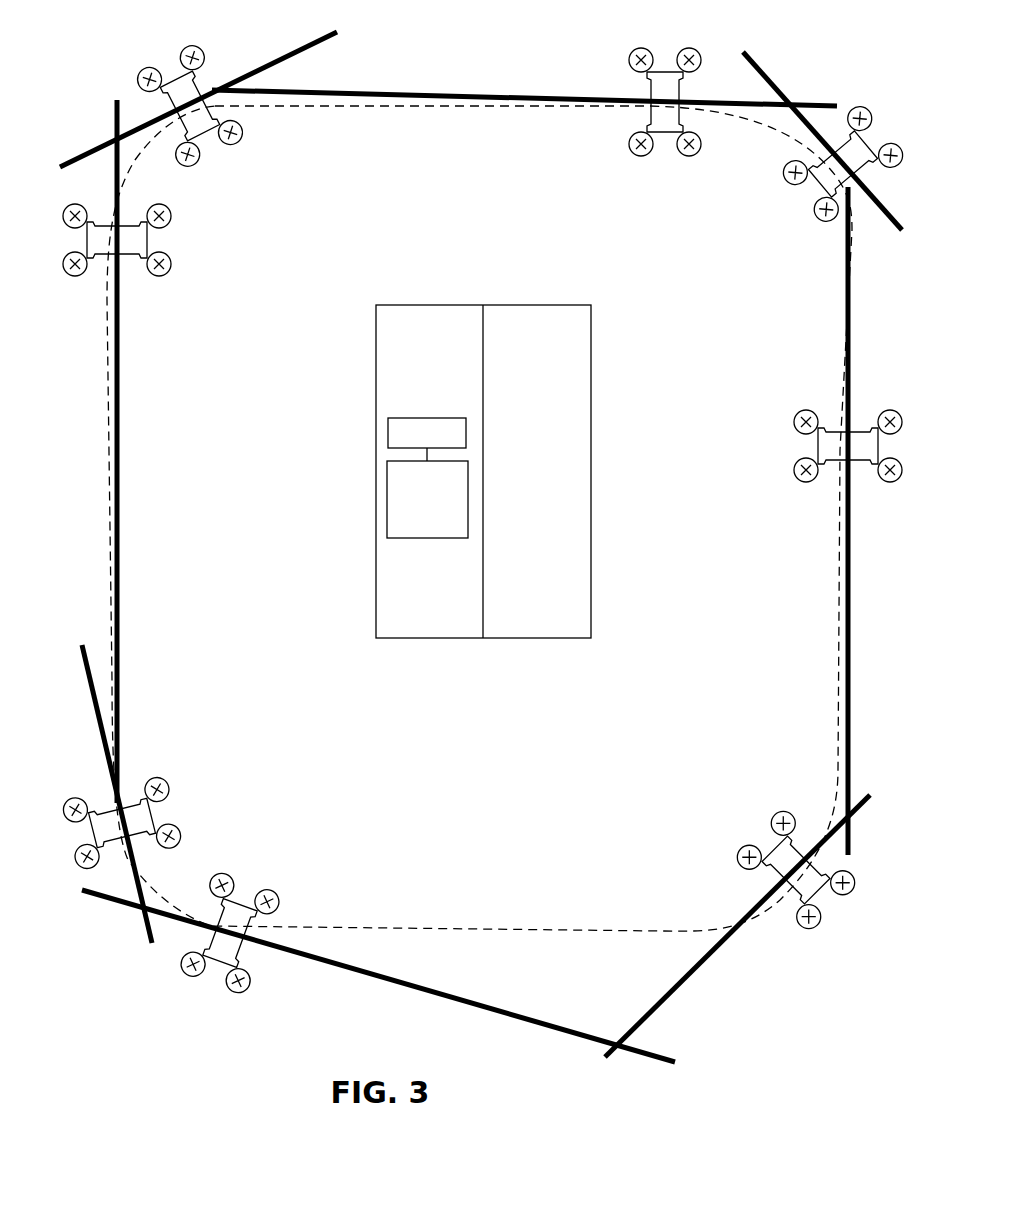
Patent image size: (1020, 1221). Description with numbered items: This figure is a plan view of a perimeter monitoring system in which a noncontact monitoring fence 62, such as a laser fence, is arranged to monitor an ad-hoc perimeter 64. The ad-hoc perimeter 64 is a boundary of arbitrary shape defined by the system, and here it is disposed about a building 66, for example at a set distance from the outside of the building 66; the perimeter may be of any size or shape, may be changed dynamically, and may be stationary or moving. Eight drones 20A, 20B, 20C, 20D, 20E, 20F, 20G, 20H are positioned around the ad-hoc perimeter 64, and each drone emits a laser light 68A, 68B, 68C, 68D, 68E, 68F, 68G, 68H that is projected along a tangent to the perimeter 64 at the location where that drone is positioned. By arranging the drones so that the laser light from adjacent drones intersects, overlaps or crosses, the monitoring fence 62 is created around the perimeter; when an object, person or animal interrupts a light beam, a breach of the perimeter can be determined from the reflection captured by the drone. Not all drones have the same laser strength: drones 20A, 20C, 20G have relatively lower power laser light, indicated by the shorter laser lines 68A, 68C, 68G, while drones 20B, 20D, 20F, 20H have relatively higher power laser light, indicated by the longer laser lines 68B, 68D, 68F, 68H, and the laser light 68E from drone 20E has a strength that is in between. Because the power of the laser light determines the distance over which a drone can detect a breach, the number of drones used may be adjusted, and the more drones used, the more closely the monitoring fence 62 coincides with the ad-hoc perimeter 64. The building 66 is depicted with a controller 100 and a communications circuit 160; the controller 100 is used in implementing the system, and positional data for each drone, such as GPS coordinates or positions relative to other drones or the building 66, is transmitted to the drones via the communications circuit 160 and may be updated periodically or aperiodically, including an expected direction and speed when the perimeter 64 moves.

The drone 20A is at (243, 137).
The drone 20B is at (162, 277).
The drone 20C is at (157, 775).
The drone 20D is at (278, 896).
The drone 20E is at (735, 858).
The drone 20F is at (795, 478).
The drone 20G is at (815, 222).
The drone 20H is at (618, 158).
The laser light 68A is at (283, 52).
The laser light 68B is at (121, 400).
The laser light 68C is at (90, 698).
The laser light 68D is at (493, 1008).
The laser light 68E is at (643, 1015).
The laser light 68F is at (850, 625).
The laser light 68G is at (775, 80).
The laser light 68H is at (543, 97).
The noncontact monitoring fence 62 is at (795, 974).
The ad-hoc perimeter 64 is at (108, 466).
The building 66 is at (479, 498).
The controller 100 is at (433, 540).
The communications circuit 160 is at (457, 418).